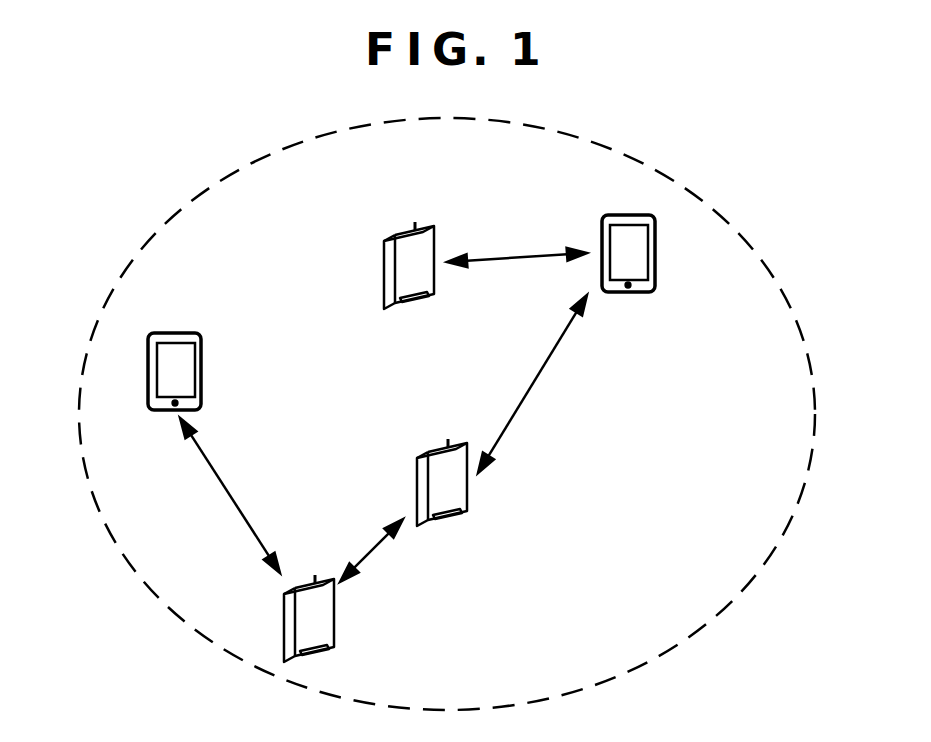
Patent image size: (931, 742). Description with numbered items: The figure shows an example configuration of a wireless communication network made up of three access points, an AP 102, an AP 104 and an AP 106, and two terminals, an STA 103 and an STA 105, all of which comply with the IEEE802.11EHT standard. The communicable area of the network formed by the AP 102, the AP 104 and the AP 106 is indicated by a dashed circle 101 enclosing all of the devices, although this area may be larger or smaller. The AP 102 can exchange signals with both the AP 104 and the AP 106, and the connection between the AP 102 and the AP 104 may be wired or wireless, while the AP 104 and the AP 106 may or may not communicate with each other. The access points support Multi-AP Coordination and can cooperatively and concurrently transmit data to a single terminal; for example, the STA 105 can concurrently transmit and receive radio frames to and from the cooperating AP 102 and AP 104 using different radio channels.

The circle 101 is at (757, 250).
The AP 102 is at (417, 483).
The STA 103 is at (203, 372).
The AP 104 is at (437, 242).
The STA 105 is at (657, 262).
The AP 106 is at (334, 627).